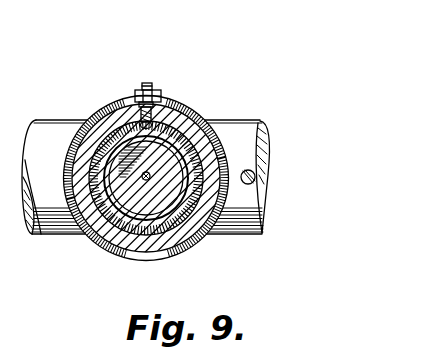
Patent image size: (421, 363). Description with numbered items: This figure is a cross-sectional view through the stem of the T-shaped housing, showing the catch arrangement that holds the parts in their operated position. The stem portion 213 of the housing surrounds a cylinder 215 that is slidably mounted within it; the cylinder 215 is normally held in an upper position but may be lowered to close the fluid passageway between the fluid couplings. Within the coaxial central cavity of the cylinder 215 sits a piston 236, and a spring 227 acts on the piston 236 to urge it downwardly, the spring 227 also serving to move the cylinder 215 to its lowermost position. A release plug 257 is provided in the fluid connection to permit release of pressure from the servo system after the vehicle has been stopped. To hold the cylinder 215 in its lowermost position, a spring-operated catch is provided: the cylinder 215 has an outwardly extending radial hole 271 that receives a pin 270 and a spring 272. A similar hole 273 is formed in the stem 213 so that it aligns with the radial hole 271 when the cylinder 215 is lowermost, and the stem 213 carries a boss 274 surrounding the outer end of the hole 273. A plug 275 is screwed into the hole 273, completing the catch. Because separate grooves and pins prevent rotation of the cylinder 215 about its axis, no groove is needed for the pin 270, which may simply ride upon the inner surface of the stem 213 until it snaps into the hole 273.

The stem portion 213 is at (197, 118).
The cylinder 215 is at (125, 224).
The spring 227 is at (148, 205).
The piston 236 is at (170, 186).
The release plug 257 is at (258, 173).
The pin 270 is at (138, 97).
The radial hole 271 is at (160, 122).
The spring 272 is at (141, 124).
The hole 273 is at (156, 103).
The boss 274 is at (141, 90).
The plug 275 is at (152, 89).